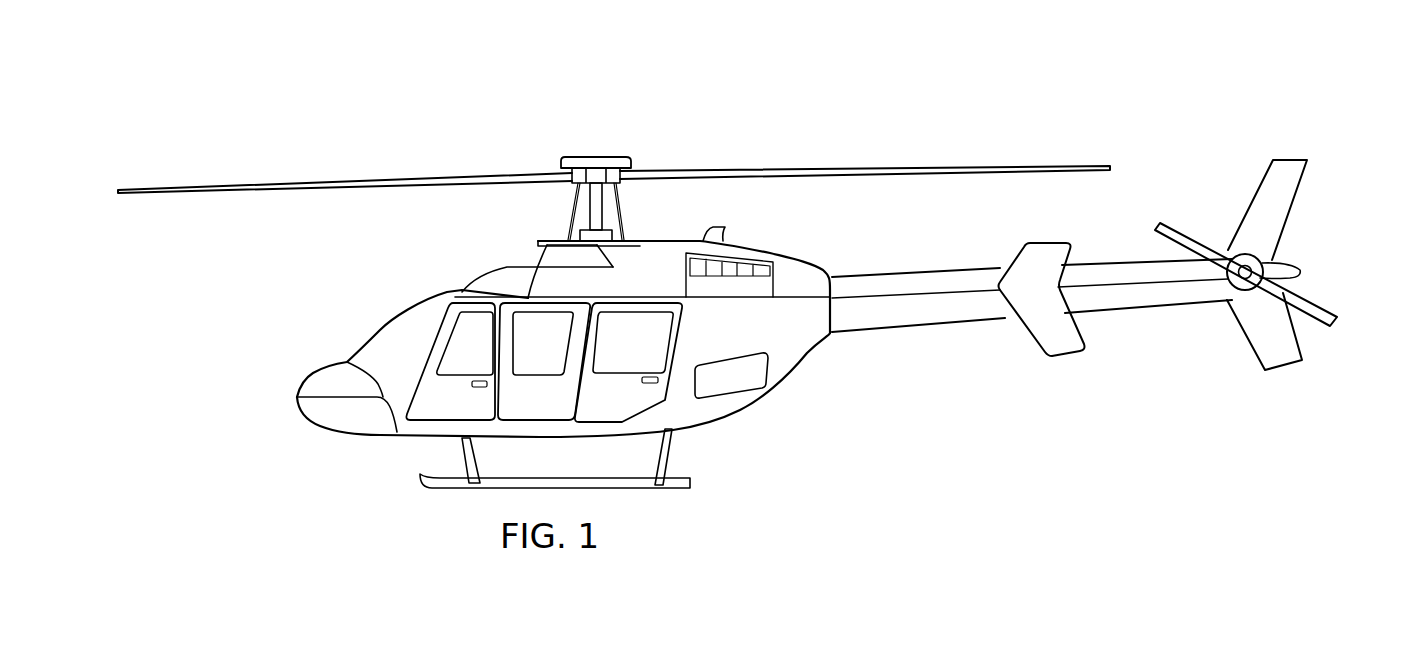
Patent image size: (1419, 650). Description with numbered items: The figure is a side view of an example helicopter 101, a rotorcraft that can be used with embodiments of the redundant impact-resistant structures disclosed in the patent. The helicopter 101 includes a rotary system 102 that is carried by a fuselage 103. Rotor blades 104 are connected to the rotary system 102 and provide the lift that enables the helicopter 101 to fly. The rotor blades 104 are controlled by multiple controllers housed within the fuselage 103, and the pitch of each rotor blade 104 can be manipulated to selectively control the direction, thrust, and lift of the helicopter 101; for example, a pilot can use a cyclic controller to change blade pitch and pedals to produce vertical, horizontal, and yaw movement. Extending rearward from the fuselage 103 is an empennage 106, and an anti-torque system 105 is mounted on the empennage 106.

The helicopter 101 is at (412, 104).
The rotary system 102 is at (625, 138).
The fuselage 103 is at (345, 431).
The rotor blades 104 is at (863, 168).
The anti-torque system 105 is at (1320, 300).
The empennage 106 is at (927, 327).